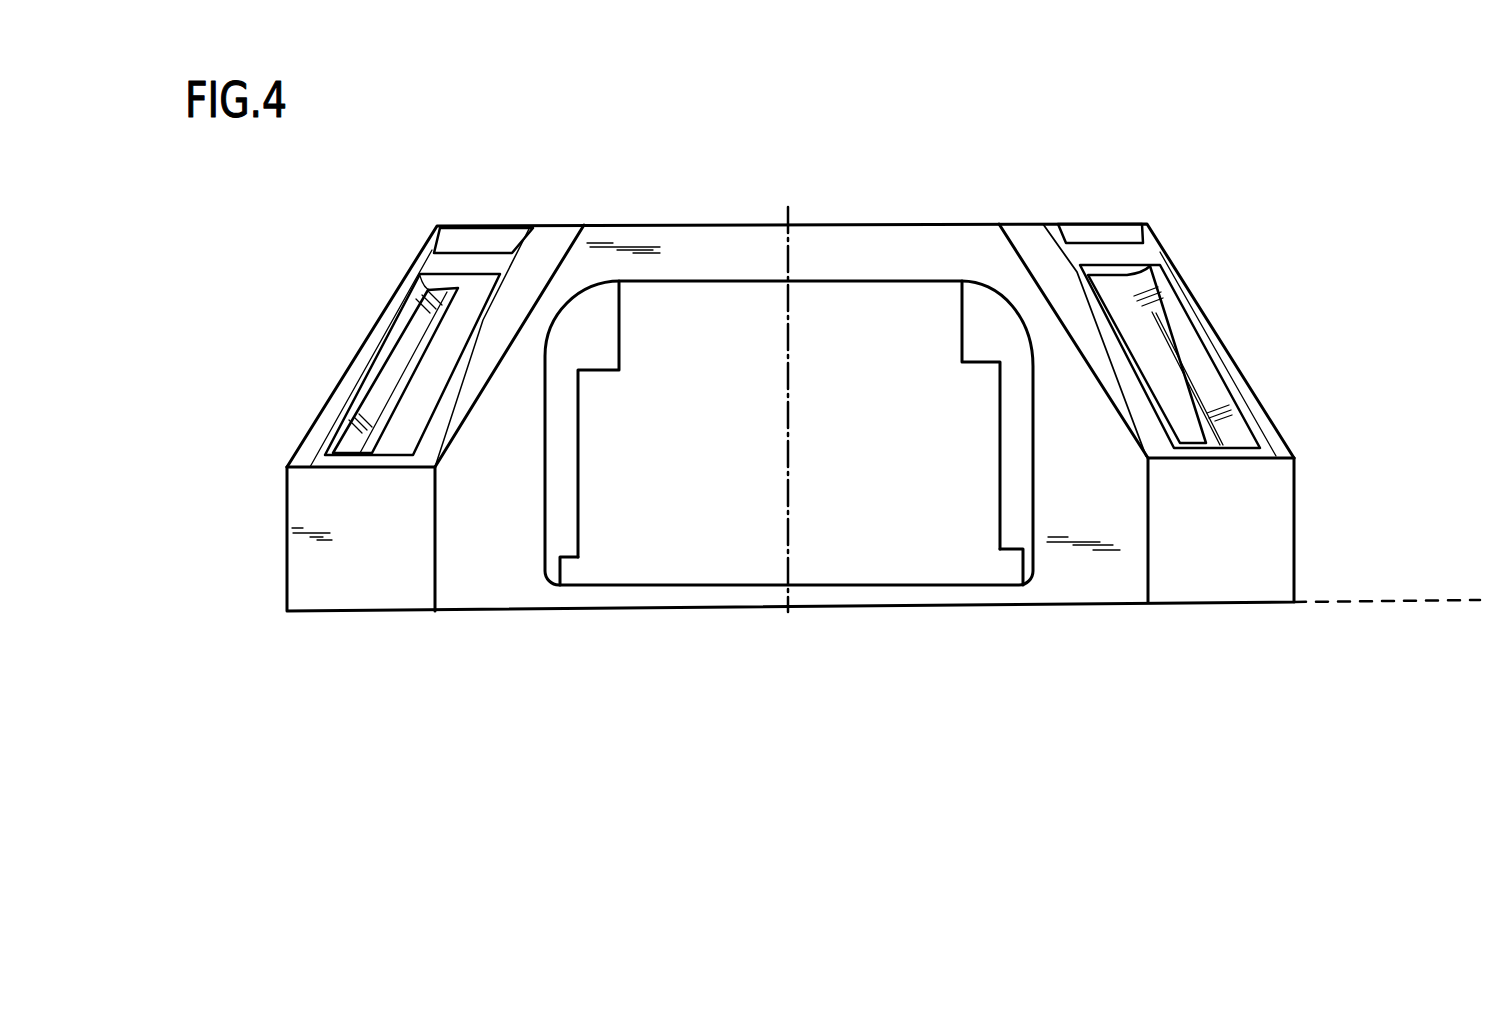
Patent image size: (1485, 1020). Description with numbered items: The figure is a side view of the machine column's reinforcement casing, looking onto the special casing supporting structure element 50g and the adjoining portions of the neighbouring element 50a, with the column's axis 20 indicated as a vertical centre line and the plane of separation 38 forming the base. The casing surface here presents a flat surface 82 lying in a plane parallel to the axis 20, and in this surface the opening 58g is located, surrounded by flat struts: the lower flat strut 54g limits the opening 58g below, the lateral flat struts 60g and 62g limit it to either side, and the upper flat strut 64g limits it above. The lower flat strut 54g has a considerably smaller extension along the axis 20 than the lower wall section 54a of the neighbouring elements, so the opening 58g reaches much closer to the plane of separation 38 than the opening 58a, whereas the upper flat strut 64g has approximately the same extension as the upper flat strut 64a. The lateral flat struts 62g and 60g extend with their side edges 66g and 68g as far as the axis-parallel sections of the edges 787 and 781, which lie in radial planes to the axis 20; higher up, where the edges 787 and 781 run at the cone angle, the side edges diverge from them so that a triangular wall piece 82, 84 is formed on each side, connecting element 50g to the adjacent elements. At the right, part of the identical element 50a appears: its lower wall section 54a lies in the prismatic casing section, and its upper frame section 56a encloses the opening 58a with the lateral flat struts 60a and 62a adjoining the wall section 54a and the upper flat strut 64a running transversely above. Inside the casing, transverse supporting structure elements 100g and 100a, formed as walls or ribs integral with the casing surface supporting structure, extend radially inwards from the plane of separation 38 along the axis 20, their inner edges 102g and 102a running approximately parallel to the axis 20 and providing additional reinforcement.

The axis 20 is at (788, 257).
The plane of separation 38 is at (1356, 600).
The casing supporting structure element 50a is at (1195, 342).
The casing supporting structure element 50g is at (682, 610).
The lower wall section 54a is at (1232, 537).
The lower flat strut 54g is at (830, 597).
The upper frame section 56a is at (1245, 368).
The opening 58a is at (1152, 315).
The opening 58g is at (822, 340).
The lateral flat strut 60a is at (1263, 418).
The lateral flat strut 60g is at (1093, 543).
The lateral flat strut 62a is at (1153, 442).
The lateral flat strut 62g is at (468, 552).
The upper flat strut 64a is at (1092, 255).
The upper flat strut 64g is at (656, 258).
The side edge 66g is at (1022, 255).
The side edge 68g is at (536, 302).
The edge 781 is at (1150, 567).
The edge 787 is at (433, 547).
The surface 82 is at (1017, 237).
The triangular wall piece 84 is at (550, 253).
The transverse supporting structure element 100a is at (1013, 407).
The transverse supporting structure element 100g is at (563, 409).
The inner edge 102a is at (1000, 507).
The inner edge 102g is at (580, 485).